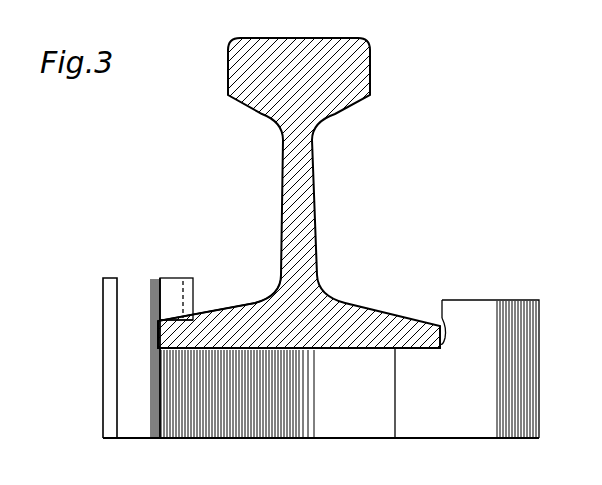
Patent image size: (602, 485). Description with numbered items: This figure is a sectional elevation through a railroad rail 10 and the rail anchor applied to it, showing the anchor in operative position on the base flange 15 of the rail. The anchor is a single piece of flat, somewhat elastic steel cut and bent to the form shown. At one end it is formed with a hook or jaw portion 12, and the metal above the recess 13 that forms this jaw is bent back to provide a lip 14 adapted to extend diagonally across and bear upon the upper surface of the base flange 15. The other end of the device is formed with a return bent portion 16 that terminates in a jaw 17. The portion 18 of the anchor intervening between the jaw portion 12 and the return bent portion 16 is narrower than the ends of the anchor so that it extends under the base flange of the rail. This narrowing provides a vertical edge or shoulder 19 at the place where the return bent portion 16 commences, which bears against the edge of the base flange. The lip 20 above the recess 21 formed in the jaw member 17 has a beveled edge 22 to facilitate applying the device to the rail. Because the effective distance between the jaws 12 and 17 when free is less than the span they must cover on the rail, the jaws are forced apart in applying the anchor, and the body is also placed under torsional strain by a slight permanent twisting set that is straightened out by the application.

The railroad rail 10 is at (366, 54).
The hook or jaw portion 12 is at (130, 318).
The recess 13 is at (188, 323).
The lip 14 is at (178, 278).
The base flange 15 is at (233, 318).
The return bent portion 16 is at (488, 313).
The jaw 17 is at (466, 300).
The intervening portion 18 is at (372, 440).
The vertical edge or shoulder 19 is at (441, 306).
The lip 20 is at (438, 300).
The recess 21 is at (437, 322).
The beveled edge 22 is at (437, 331).